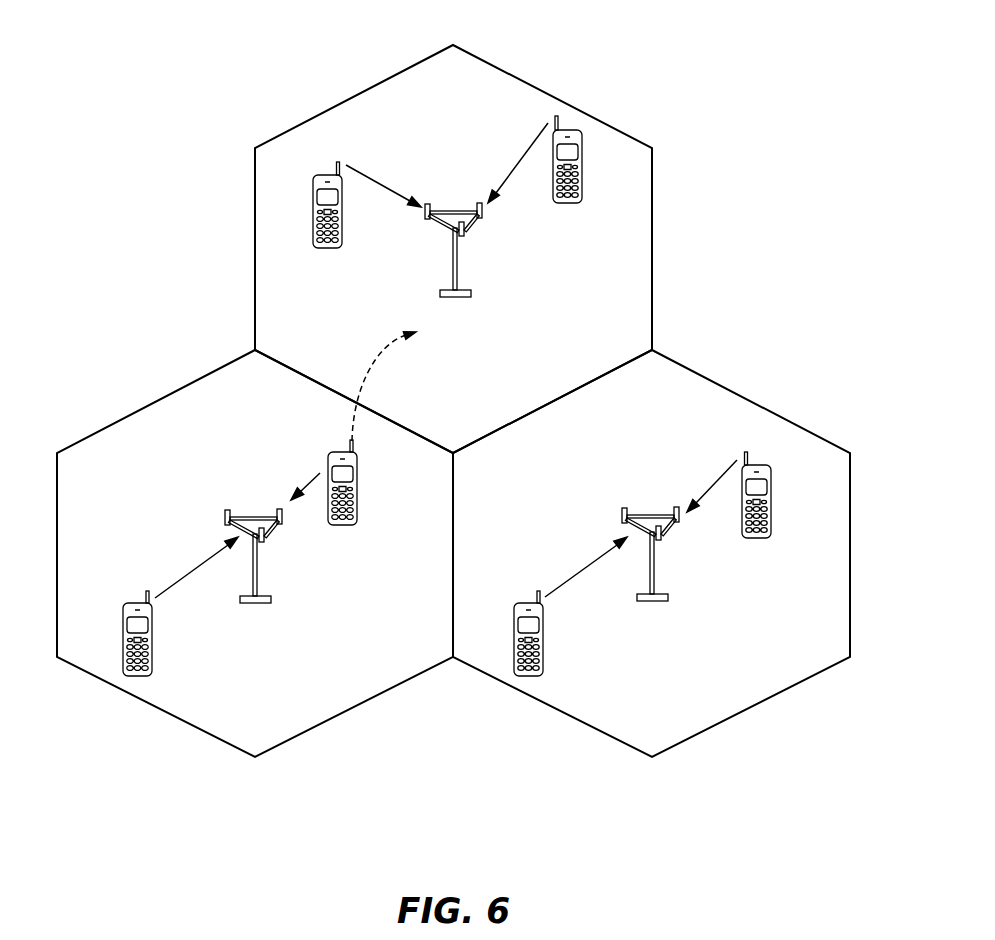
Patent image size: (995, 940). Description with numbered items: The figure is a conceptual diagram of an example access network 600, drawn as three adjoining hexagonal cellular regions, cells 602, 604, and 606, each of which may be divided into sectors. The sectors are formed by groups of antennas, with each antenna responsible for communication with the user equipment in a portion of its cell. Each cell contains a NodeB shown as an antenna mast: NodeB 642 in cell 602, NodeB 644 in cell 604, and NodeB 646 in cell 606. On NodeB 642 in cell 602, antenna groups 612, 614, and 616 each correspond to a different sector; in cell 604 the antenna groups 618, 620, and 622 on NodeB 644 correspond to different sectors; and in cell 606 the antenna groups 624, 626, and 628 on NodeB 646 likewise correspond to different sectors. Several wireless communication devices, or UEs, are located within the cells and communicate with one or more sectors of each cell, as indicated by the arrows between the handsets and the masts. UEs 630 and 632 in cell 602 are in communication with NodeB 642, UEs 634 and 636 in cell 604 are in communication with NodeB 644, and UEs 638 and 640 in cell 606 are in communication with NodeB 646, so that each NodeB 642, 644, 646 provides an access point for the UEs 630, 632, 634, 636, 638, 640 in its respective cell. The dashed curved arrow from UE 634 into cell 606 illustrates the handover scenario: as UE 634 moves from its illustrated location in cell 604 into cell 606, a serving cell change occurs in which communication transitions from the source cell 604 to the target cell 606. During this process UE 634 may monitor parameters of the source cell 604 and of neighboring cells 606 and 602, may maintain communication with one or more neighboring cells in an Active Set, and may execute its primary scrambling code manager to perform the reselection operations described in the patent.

The access network 600 is at (765, 67).
The cell 602 is at (750, 398).
The cell 604 is at (131, 413).
The cell 606 is at (537, 87).
The antenna group 612 is at (622, 521).
The antenna group 614 is at (663, 541).
The antenna group 616 is at (680, 523).
The antenna group 618 is at (266, 542).
The antenna group 620 is at (282, 524).
The antenna group 622 is at (224, 523).
The antenna group 624 is at (426, 219).
The antenna group 626 is at (465, 236).
The antenna group 628 is at (482, 218).
The UE 630 is at (774, 486).
The UE 632 is at (515, 627).
The UE 634 is at (357, 472).
The UE 636 is at (124, 626).
The UE 638 is at (330, 249).
The UE 640 is at (569, 203).
The NodeB 642 is at (650, 535).
The NodeB 644 is at (253, 536).
The NodeB 646 is at (453, 230).